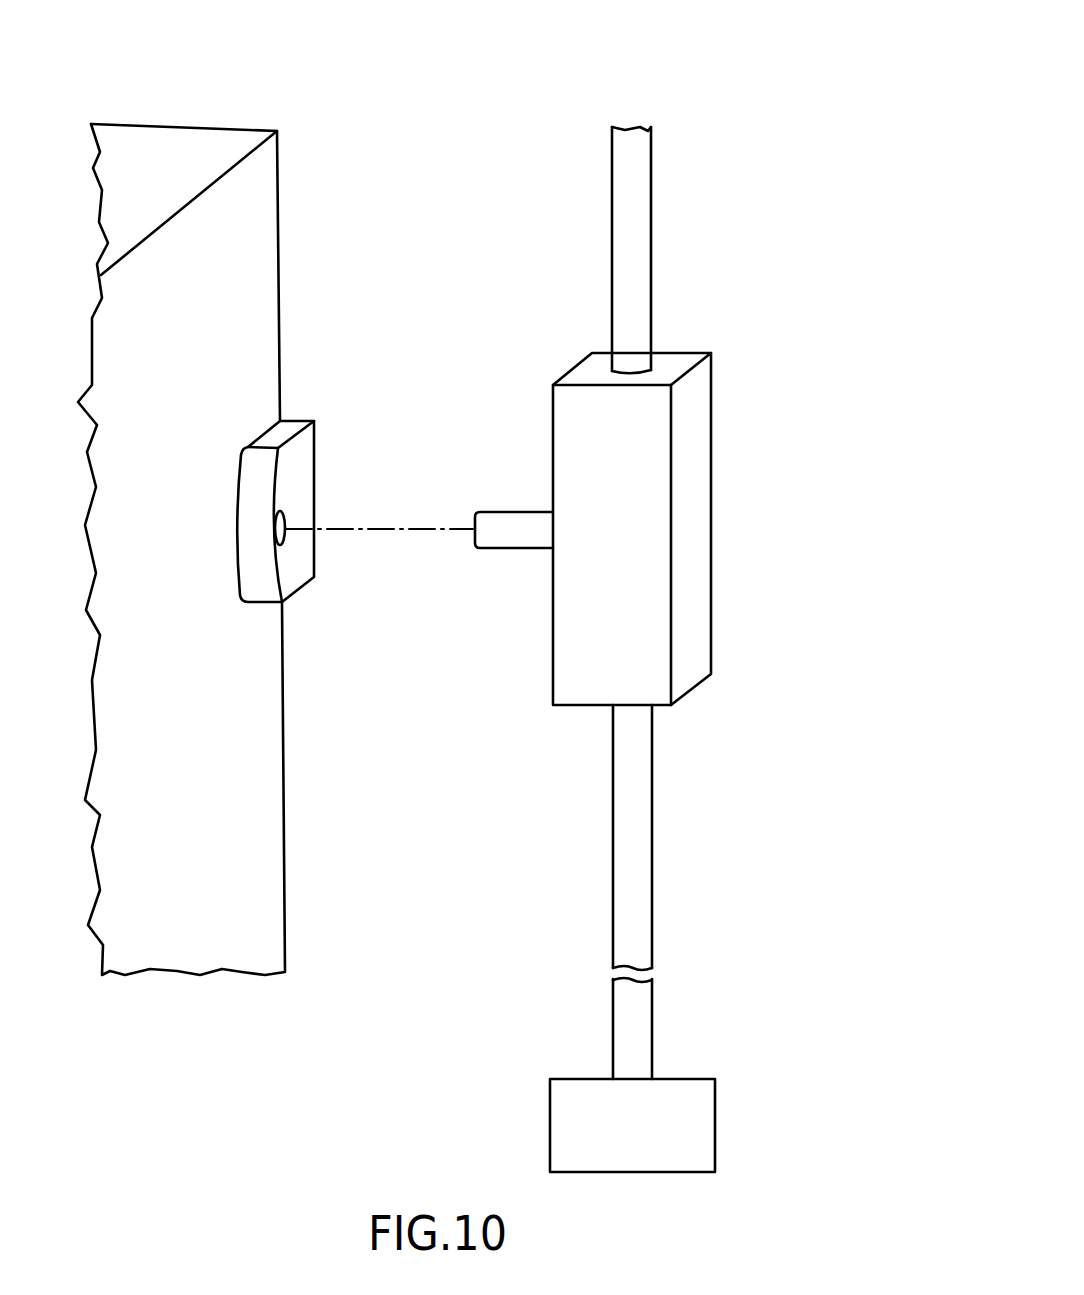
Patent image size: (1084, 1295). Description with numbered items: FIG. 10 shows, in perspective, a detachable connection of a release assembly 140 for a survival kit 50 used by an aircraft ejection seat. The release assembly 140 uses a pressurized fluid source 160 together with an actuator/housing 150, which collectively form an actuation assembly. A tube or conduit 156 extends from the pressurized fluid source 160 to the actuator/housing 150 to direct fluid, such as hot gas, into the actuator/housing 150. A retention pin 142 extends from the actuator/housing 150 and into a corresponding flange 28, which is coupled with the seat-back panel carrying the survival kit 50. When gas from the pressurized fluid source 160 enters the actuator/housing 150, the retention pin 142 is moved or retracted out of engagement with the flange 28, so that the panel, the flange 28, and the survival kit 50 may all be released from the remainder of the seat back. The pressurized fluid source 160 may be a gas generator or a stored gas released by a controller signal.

The flange 28 is at (285, 427).
The survival kit 50 is at (140, 975).
The release assembly 140 is at (670, 92).
The retention pin 142 is at (513, 548).
The actuator/housing 150 is at (712, 475).
The tube or conduit 156 is at (652, 858).
The pressurized fluid source 160 is at (649, 1162).